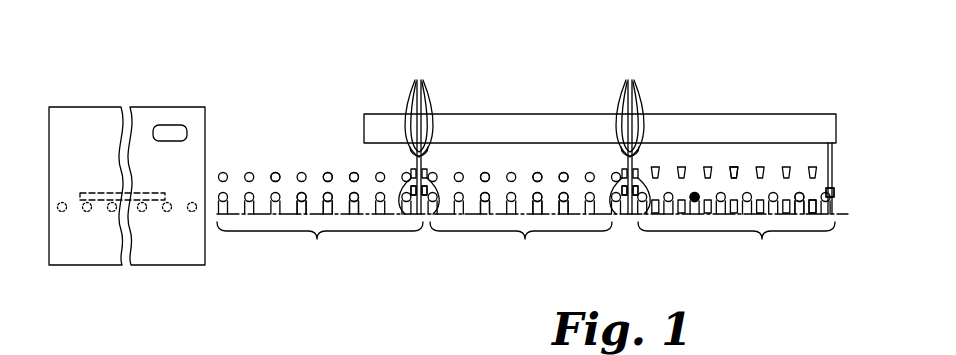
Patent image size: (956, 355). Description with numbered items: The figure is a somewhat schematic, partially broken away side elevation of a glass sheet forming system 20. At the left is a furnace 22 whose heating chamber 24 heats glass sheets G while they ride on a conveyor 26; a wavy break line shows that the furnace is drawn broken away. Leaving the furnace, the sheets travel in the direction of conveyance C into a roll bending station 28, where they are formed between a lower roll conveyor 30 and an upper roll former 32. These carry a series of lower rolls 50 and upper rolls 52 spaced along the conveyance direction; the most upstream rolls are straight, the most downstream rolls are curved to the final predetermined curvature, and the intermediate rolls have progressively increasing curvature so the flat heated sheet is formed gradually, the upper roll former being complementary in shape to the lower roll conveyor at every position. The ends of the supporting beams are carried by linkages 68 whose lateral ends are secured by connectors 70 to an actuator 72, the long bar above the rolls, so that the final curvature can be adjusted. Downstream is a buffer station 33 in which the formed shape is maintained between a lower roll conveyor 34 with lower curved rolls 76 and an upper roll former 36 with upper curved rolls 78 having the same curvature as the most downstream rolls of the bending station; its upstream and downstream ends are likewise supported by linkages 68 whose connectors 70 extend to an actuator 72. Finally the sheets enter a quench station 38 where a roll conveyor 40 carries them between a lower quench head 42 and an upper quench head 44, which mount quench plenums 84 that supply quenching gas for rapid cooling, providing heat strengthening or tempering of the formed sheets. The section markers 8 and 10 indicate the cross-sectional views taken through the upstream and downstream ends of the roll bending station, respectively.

The section line 8- 8 is at (238, 54).
The section line 10- 10 is at (403, 54).
The glass sheet forming system 20 is at (557, 46).
The furnace 22 is at (144, 105).
The heating chamber 24 is at (170, 126).
The conveyor 26 is at (62, 213).
The roll bending station 28 is at (320, 217).
The lower roll conveyor 30 is at (296, 194).
The upper roll former 32 is at (267, 175).
The buffer station 33 is at (524, 217).
The lower roll conveyor 34 is at (490, 191).
The upper roll former 36 is at (483, 170).
The quench station 38 is at (736, 229).
The roll conveyor 40 is at (810, 187).
The lower quench head 42 is at (694, 191).
The upper quench head 44 is at (741, 162).
The lower rolls 50 is at (372, 204).
The upper rolls 52 is at (353, 172).
The linkages 68 is at (421, 196).
The connectors 70 is at (843, 80).
The actuator 72 is at (367, 114).
The lower curved rolls 76 is at (565, 204).
The upper curved rolls 78 is at (565, 172).
The quench plenums 84 is at (734, 166).
The glass sheets G is at (111, 192).
The direction of conveyance C is at (318, 156).